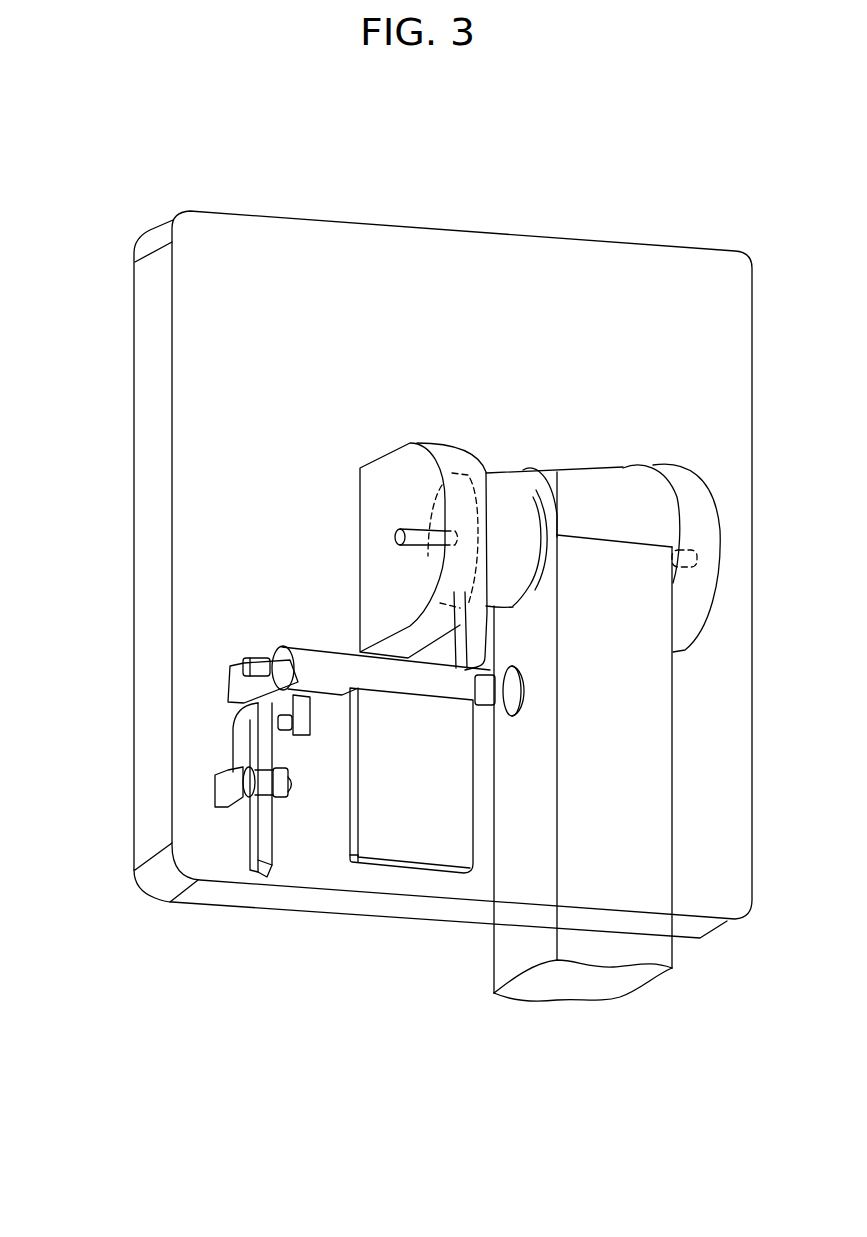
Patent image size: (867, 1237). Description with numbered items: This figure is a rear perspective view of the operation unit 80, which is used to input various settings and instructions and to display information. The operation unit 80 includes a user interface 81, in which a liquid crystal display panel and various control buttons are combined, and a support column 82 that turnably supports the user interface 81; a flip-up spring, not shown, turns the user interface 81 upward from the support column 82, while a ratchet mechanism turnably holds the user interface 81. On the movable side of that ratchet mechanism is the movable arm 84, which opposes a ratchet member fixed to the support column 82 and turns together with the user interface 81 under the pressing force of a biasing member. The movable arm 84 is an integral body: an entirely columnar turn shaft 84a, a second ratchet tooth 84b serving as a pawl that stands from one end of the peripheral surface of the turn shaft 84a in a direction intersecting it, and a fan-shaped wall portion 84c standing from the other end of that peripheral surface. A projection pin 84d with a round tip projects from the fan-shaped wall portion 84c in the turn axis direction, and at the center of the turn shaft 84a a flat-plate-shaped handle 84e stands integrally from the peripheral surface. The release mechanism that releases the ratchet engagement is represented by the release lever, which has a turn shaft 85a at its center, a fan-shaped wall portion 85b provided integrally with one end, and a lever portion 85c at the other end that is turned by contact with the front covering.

The operation unit 80 is at (106, 198).
The user interface 81 is at (122, 429).
The support column 82 is at (607, 848).
The movable arm 84 is at (317, 629).
The turn shaft 84a is at (308, 652).
The second ratchet tooth 84b is at (475, 637).
The fan-shaped wall portion 84c is at (285, 652).
The projection pin 84d is at (243, 668).
The handle 84e is at (424, 823).
The turn shaft 85a is at (217, 778).
The fan-shaped wall portion 85b is at (247, 737).
The lever portion 85c is at (263, 833).